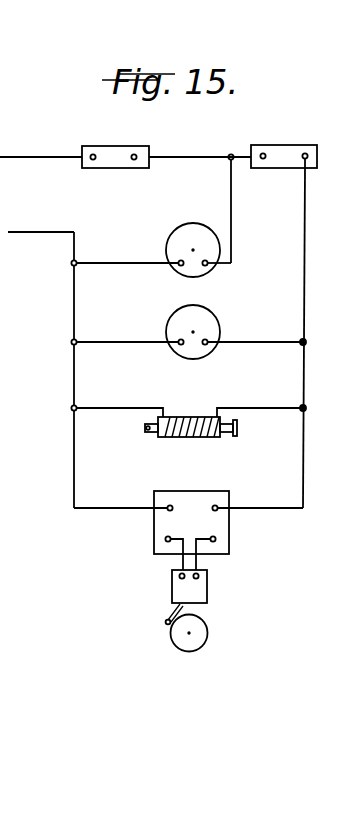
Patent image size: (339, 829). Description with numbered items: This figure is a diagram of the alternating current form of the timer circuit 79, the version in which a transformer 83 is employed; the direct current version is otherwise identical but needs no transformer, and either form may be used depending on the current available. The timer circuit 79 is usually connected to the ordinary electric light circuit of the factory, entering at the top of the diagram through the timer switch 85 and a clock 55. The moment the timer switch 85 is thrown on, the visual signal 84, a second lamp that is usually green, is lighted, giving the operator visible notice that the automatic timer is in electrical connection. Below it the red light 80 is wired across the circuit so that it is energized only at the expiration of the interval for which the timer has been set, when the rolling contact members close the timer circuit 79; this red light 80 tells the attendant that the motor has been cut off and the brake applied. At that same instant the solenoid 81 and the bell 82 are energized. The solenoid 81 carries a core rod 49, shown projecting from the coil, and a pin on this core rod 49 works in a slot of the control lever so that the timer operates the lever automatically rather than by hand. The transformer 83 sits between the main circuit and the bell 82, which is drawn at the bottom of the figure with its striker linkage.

The timer switch 85 is at (115, 164).
The clock 55 is at (285, 163).
The visual signal 84 is at (190, 227).
The red light 80 is at (172, 315).
The timer circuit 79 is at (303, 373).
The core rod 49 is at (152, 432).
The solenoid 81 is at (221, 436).
The transformer 83 is at (154, 531).
The bell 82 is at (195, 651).